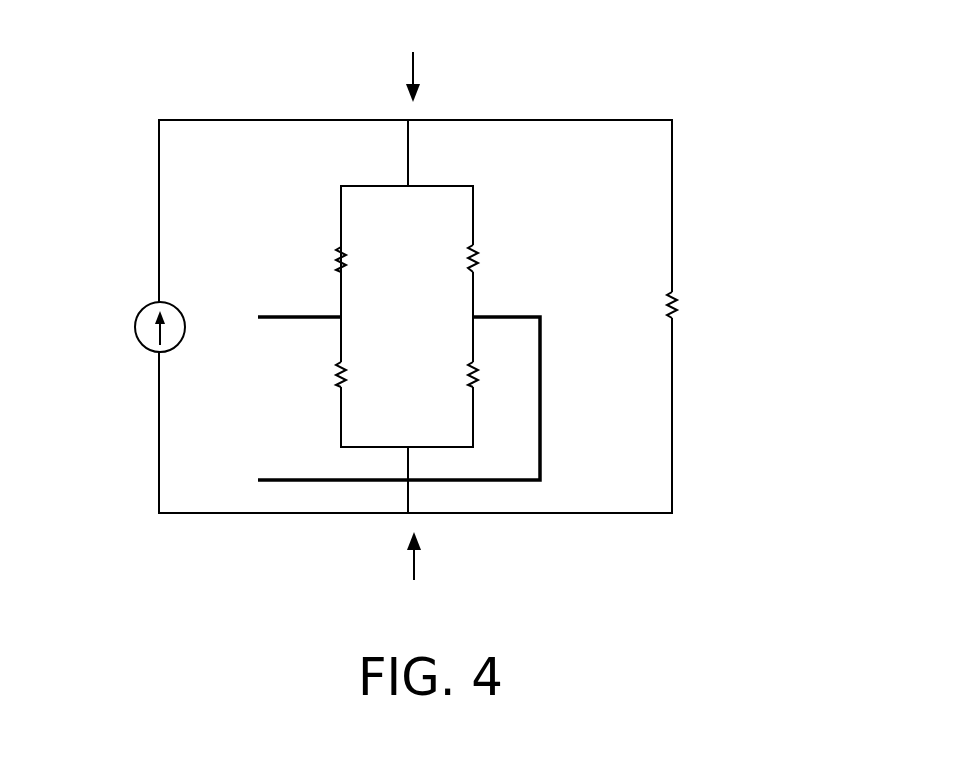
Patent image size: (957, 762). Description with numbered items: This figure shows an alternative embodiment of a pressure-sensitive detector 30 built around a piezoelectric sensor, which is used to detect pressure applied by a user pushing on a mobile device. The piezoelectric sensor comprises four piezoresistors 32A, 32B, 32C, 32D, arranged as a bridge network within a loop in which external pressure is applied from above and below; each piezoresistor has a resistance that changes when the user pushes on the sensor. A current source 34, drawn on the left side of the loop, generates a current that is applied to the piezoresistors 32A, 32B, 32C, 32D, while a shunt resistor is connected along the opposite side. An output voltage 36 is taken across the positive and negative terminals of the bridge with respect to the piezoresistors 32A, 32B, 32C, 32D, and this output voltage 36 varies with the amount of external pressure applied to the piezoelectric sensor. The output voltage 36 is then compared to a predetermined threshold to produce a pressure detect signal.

The pressure-sensitive detector 30 is at (735, 55).
The piezoresistor 32A is at (353, 262).
The piezoresistor 32B is at (465, 260).
The piezoresistor 32C is at (353, 375).
The piezoresistor 32D is at (465, 373).
The current source 34 is at (137, 327).
The output voltage 36 is at (203, 397).